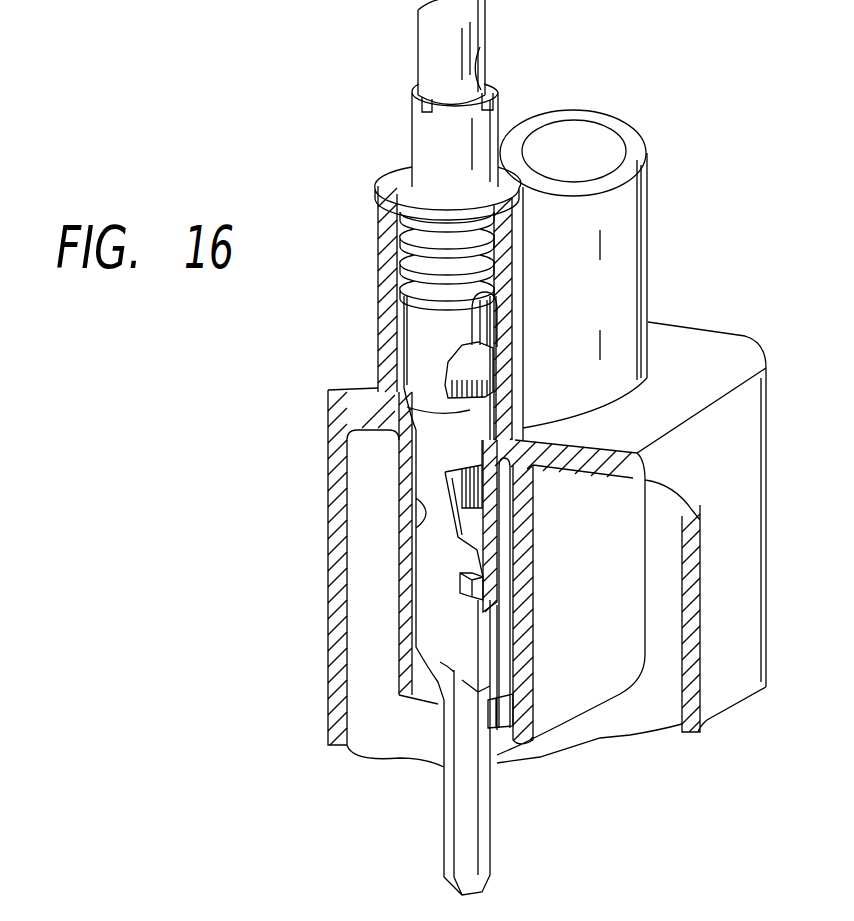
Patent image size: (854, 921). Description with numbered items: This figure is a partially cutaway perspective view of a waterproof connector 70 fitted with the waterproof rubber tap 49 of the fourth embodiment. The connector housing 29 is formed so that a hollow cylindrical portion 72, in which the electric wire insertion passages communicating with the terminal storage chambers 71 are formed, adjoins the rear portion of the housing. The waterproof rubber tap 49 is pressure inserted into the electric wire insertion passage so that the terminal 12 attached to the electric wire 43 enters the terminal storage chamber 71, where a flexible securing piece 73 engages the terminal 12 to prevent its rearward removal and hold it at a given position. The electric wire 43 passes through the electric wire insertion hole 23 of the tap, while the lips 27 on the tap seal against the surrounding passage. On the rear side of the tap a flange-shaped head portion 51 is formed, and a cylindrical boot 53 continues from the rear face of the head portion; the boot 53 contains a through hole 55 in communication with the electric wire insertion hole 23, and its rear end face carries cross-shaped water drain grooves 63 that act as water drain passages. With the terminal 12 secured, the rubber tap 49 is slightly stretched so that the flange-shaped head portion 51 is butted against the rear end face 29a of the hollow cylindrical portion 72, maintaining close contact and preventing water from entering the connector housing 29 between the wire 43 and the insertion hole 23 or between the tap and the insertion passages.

The terminal 12 is at (430, 453).
The electric wire insertion hole 23 is at (568, 133).
The lips 27 is at (482, 332).
The connector housing 29 is at (392, 307).
The rear end face 29a is at (628, 137).
The electric wire 43 is at (428, 27).
The waterproof rubber tap 49 is at (398, 240).
The flange-shaped head portion 51 is at (405, 170).
The cylindrical boot 53 is at (430, 127).
The through hole 55 is at (472, 47).
The water drain grooves 63 is at (492, 80).
The waterproof connector 70 is at (720, 255).
The terminal storage chamber 71 is at (435, 499).
The hollow cylindrical portion 72 is at (635, 228).
The flexible securing piece 73 is at (468, 588).